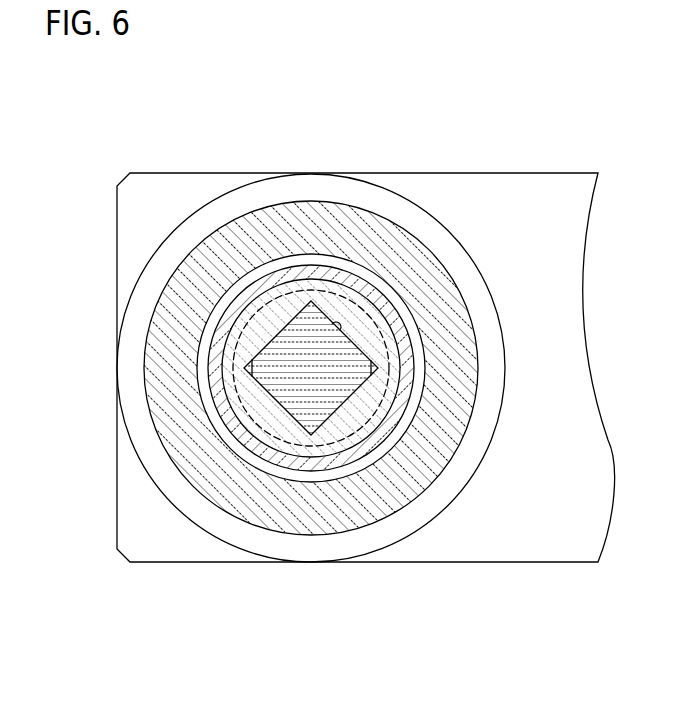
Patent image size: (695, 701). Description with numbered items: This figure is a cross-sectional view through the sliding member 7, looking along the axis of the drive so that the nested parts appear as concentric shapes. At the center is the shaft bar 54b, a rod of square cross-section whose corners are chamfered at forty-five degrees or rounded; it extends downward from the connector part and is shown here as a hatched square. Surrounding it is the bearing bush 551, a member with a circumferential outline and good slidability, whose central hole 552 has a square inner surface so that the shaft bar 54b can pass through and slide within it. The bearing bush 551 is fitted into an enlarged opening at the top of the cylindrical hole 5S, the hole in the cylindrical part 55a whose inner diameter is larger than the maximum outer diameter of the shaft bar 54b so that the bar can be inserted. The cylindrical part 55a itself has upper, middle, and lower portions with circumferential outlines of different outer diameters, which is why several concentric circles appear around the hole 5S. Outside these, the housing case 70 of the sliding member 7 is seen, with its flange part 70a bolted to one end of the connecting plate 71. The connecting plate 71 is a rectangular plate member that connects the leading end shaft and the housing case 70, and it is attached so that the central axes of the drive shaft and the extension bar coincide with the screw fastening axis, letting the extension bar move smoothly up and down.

The sliding member 7 is at (343, 100).
The cylindrical hole 5S is at (257, 310).
The cylindrical part 55a is at (294, 272).
The hole 552 is at (332, 323).
The bearing bush 551 is at (375, 318).
The shaft bar 54b is at (352, 347).
The housing case 70 is at (145, 378).
The flange part 70a is at (143, 437).
The connecting plate 71 is at (497, 556).